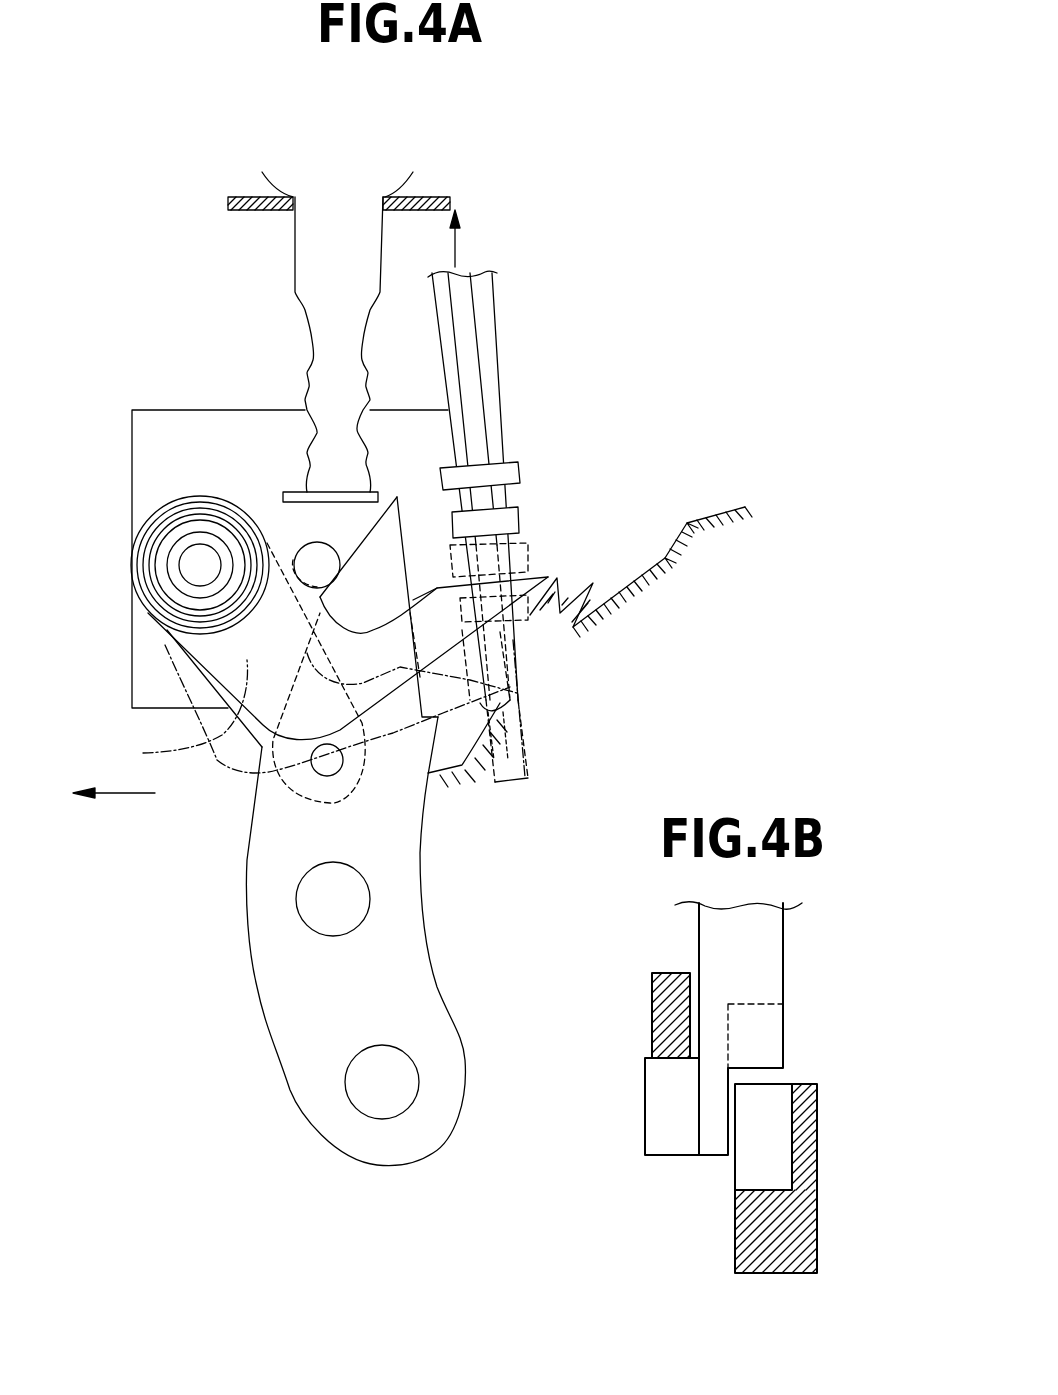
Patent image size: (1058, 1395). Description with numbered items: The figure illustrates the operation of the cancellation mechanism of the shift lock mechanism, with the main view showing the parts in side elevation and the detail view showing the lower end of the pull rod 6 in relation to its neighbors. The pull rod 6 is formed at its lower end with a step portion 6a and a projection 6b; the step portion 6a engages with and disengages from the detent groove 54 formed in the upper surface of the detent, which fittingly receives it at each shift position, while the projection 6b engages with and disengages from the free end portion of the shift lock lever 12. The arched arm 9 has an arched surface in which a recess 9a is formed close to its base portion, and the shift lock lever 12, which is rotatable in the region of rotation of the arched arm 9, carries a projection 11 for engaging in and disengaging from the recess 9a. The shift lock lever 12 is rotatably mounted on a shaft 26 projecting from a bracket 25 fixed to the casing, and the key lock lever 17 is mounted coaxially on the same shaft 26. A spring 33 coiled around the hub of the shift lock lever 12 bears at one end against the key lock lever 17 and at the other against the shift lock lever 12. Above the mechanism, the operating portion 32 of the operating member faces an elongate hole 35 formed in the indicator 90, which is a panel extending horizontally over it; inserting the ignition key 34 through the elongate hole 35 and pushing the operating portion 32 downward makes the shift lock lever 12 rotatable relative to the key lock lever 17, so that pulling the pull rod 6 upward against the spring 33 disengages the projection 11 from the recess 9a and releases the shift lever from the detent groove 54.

In FIG. 4A, the pull rod 6 is at (497, 318).
In FIG. 4B, the pull rod 6 is at (773, 962).
In FIG. 4A, the step portion 6a is at (517, 640).
In FIG. 4B, the step portion 6a is at (773, 1038).
In FIG. 4A, the projection 6b is at (525, 650).
In FIG. 4B, the projection 6b is at (652, 1113).
In FIG. 4A, the arched arm 9 is at (247, 938).
In FIG. 4A, the recess 9a is at (337, 553).
In FIG. 4A, the projection 11 is at (305, 553).
In FIG. 4A, the shift lock lever 12 is at (227, 650).
In FIG. 4B, the shift lock lever 12 is at (667, 1018).
In FIG. 4A, the key lock lever 17 is at (250, 733).
In FIG. 4A, the bracket 25 is at (143, 410).
In FIG. 4A, the shaft 26 is at (183, 565).
In FIG. 4A, the operating portion 32 is at (293, 490).
In FIG. 4A, the spring 33 is at (163, 510).
In FIG. 4A, the ignition key 34 is at (293, 237).
In FIG. 4A, the elongate hole 35 is at (302, 198).
In FIG. 4A, the detent groove 54 is at (590, 556).
In FIG. 4B, the detent groove 54 is at (823, 1150).
In FIG. 4A, the indicator 90 is at (422, 198).